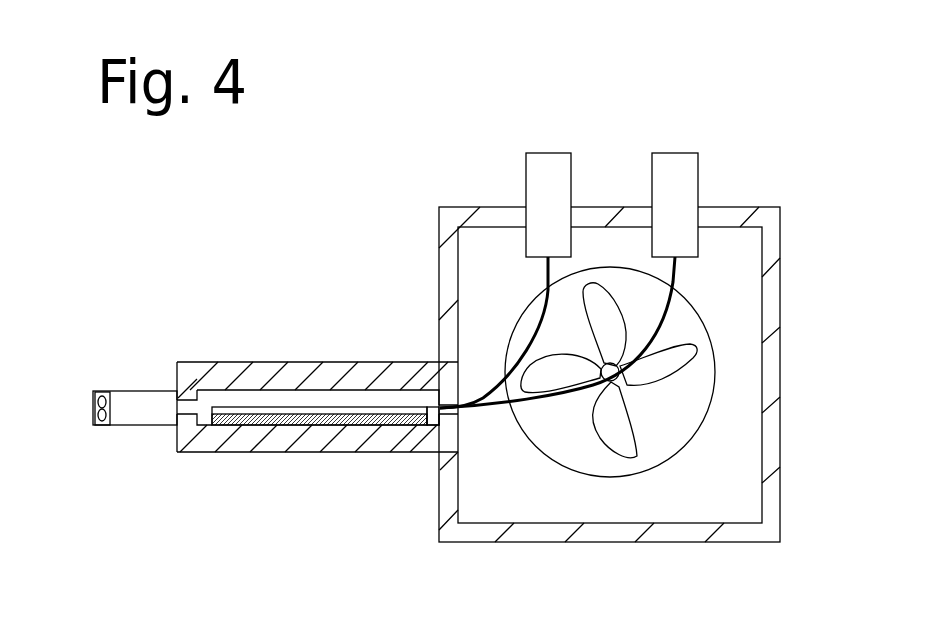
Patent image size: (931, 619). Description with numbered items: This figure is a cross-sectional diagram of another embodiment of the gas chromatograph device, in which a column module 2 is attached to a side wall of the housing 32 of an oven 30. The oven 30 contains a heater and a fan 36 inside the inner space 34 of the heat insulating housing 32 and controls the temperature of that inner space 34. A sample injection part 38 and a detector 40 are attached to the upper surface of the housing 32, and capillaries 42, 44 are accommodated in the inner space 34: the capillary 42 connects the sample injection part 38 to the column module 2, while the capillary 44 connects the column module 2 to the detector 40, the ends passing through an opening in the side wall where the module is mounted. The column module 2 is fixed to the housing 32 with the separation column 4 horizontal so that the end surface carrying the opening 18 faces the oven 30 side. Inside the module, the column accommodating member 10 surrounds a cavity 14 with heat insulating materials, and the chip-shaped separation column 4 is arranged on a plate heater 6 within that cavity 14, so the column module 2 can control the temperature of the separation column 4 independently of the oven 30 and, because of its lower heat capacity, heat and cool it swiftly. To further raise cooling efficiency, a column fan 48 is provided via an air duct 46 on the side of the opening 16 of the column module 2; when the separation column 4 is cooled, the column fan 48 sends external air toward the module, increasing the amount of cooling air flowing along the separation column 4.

The column module 2 is at (202, 348).
The separation column 4 is at (292, 412).
The plate heater 6 is at (322, 453).
The column accommodating member 10 is at (320, 370).
The cavity 14 is at (372, 397).
The opening 16 is at (185, 407).
The opening 18 is at (447, 390).
The oven 30 is at (780, 207).
The housing 32 is at (772, 365).
The inner space 34 is at (740, 432).
The fan 36 is at (677, 363).
The sample injection part 38 is at (537, 178).
The detector 40 is at (682, 173).
The capillary 42 is at (547, 275).
The capillary 44 is at (677, 273).
The air duct 46 is at (145, 397).
The column fan 48 is at (98, 390).